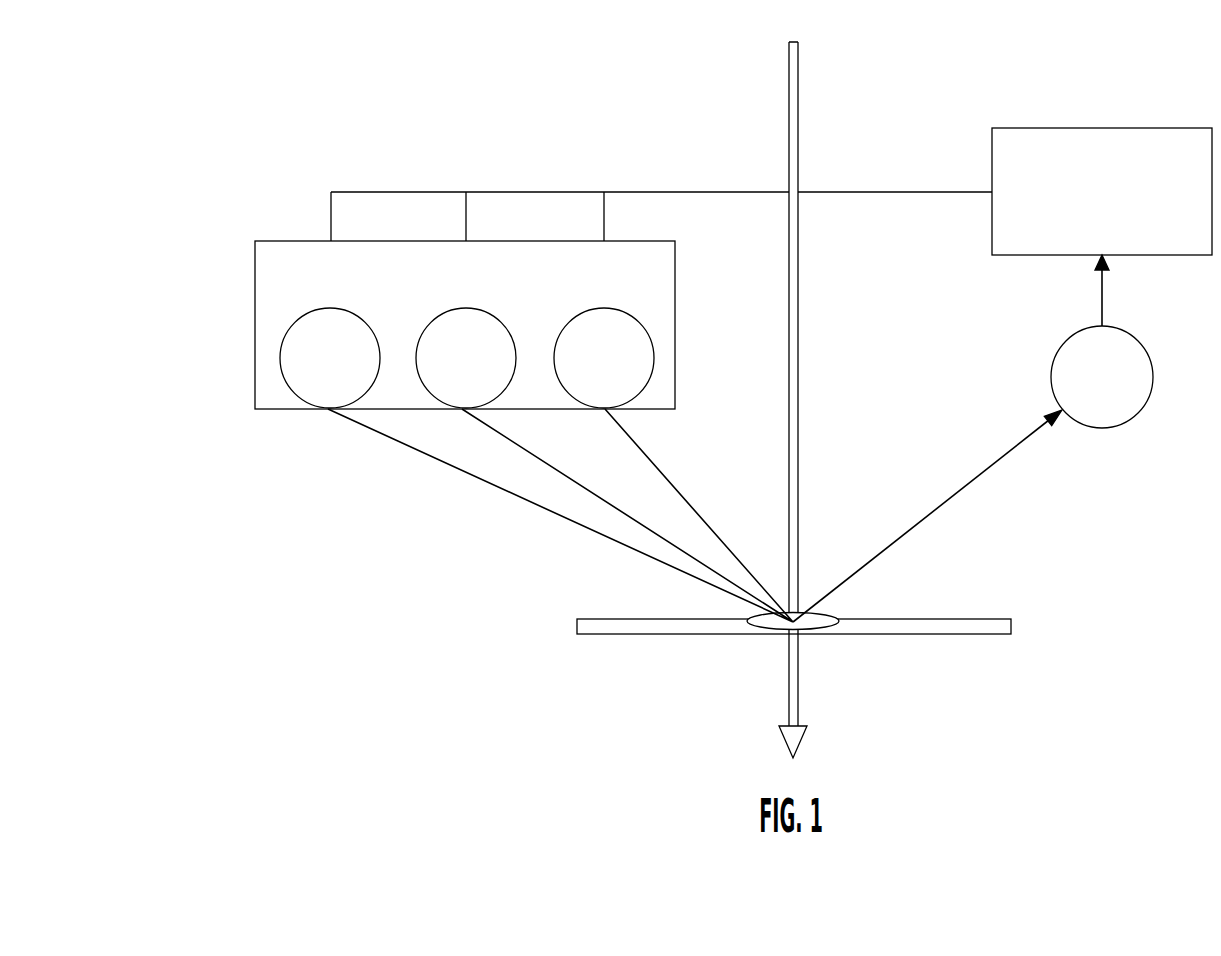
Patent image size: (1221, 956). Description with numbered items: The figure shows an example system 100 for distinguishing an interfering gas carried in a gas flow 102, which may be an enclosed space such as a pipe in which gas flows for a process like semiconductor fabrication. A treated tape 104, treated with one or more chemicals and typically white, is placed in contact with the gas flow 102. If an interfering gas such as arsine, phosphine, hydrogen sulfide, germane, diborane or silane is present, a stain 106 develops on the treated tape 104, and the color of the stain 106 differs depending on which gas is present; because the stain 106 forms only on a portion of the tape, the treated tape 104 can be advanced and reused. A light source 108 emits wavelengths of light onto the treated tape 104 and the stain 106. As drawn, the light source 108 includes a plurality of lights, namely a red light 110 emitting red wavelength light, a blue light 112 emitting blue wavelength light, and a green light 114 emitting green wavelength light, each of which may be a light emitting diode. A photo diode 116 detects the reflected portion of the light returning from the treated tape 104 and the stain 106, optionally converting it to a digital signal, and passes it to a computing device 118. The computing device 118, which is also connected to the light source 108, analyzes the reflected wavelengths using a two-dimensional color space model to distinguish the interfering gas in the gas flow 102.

The system 100 is at (129, 150).
The gas flow 102 is at (789, 122).
The treated tape 104 is at (634, 635).
The stain 106 is at (823, 631).
The light source 108 is at (255, 325).
The red light 110 is at (332, 307).
The blue light 112 is at (466, 307).
The green light 114 is at (604, 307).
The photo diode 116 is at (1134, 338).
The computing device 118 is at (1097, 128).